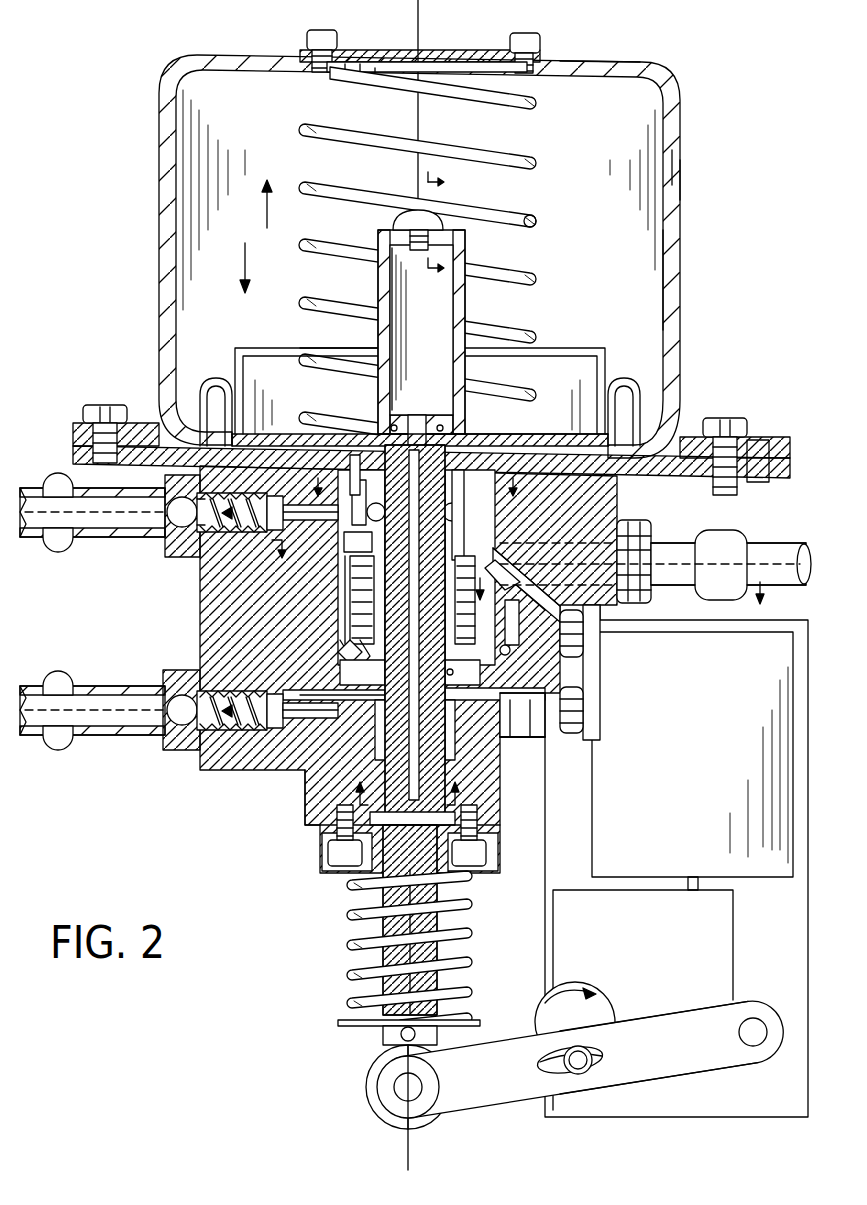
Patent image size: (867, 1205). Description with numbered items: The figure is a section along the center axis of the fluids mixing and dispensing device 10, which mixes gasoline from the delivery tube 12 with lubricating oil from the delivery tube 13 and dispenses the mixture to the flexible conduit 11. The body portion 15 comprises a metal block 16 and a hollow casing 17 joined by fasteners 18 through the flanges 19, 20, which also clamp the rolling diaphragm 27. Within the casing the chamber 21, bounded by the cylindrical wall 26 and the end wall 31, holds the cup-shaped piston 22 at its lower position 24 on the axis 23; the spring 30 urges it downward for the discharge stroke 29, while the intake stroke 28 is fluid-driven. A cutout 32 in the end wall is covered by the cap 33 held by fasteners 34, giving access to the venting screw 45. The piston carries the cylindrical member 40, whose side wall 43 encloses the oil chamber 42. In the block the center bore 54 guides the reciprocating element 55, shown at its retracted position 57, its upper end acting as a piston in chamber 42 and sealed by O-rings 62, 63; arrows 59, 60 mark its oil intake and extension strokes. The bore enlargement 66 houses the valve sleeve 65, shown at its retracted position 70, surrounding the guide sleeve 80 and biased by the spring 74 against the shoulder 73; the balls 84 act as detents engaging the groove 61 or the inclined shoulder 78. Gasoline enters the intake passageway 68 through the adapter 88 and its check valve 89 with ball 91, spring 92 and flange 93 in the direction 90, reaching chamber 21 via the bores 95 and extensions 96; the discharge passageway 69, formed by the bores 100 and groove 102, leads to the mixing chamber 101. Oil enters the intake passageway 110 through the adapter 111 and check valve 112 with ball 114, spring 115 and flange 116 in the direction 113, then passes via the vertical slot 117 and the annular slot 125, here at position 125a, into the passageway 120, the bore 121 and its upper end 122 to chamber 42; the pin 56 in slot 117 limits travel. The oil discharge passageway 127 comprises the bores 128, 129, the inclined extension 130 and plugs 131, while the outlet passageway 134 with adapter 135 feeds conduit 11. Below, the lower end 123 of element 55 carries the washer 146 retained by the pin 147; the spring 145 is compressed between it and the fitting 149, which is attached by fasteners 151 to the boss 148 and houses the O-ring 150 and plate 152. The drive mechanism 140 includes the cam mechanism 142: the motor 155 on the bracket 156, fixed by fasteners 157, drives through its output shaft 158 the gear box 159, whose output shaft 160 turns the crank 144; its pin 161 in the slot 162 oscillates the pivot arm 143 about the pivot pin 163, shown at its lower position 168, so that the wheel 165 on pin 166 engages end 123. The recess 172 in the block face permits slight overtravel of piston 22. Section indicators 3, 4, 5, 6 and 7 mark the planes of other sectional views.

The fluids mixing and dispensing device 10 is at (681, 168).
The flexible conduit 11 is at (758, 530).
The flexible delivery tube 12 is at (60, 540).
The flexible delivery tube 13 is at (72, 738).
The rigid body portion 15 is at (680, 318).
The solid cylindrical metal block 16 is at (200, 606).
The hollow cylindrical casing 17 is at (681, 243).
The screw type metal fasteners 18 is at (110, 405).
The annular flange 19 is at (770, 474).
The annular flange 20 is at (765, 453).
The chamber 21 is at (660, 160).
The piston 22 is at (268, 348).
The axis 23 is at (430, 130).
The lower position 24 is at (322, 348).
The cylindrical wall 26 is at (180, 240).
The rolling type circular diaphragm 27 is at (216, 378).
The intake stroke arrow 28 is at (272, 212).
The discharge stroke arrow 29 is at (242, 266).
The coiled compression spring 30 is at (536, 218).
The upper end wall 31 is at (585, 80).
The circular cutout 32 is at (350, 82).
The disk-type cap 33 is at (365, 58).
The screw type fasteners 34 is at (330, 32).
The hollow elongated cylindrical member 40 is at (382, 290).
The cylindrical chamber 42 is at (445, 310).
The cylindrical side wall 43 is at (390, 330).
The venting screw 45 is at (393, 222).
The center bore 54 is at (452, 738).
The reciprocatingly driven element 55 is at (378, 688).
The pin 56 is at (408, 835).
The retracted position 57 is at (360, 900).
The oil intake stroke arrow 59 is at (372, 737).
The stroke arrow 60 is at (440, 750).
The annular groove 61 is at (368, 670).
The O-ring 62 is at (388, 426).
The O-ring type seal 63 is at (450, 662).
The valve sleeve 65 is at (350, 572).
The cylindrical enlargement 66 is at (344, 595).
The intake passageway 68 is at (280, 525).
The discharge passageway 69 is at (500, 505).
The retracted position 70 is at (545, 575).
The shoulder 73 is at (500, 620).
The coiled compression spring 74 is at (340, 622).
The inclined annular shoulder 78 is at (380, 545).
The guide sleeve 80 is at (348, 630).
The metal ball 84 is at (383, 508).
The adapter 88 is at (190, 555).
The check valve 89 is at (172, 524).
The flow direction arrow 90 is at (245, 532).
The ball 91 is at (196, 504).
The coiled spring 92 is at (232, 493).
The annular flange 93 is at (276, 495).
The vertical bores 95 is at (372, 470).
The radial extensions 96 is at (348, 555).
The vertical bores 100 is at (500, 485).
The mixing chamber 101 is at (520, 604).
The annular groove 102 is at (488, 446).
The oil intake passageway 110 is at (298, 720).
The adapter 111 is at (185, 750).
The check valve 112 is at (178, 696).
The flow direction arrow 113 is at (232, 725).
The ball 114 is at (216, 691).
The compression spring 115 is at (250, 691).
The annular flange 116 is at (280, 694).
The vertical slot 117 is at (368, 757).
The passageway 120 is at (452, 677).
The axially extending bore 121 is at (440, 712).
The upper end 122 is at (404, 415).
The lower end 123 is at (380, 1048).
The annular slot 125 is at (410, 870).
The slot position 125a is at (390, 702).
The oil discharge passageway 127 is at (581, 672).
The horizontal bore 128 is at (492, 718).
The vertical bore 129 is at (510, 650).
The inclined extension 130 is at (520, 563).
The end plugs 131 is at (538, 742).
The mixed fluids outlet passageway 134 is at (598, 540).
The adapter 135 is at (636, 520).
The drive mechanism 140 is at (518, 1104).
The cam mechanism 142 is at (672, 1012).
The pivot arm 143 is at (672, 1078).
The crank 144 is at (596, 996).
The compression spring 145 is at (352, 940).
The washer 146 is at (338, 1020).
The radially projecting pin 147 is at (383, 1038).
The boss 148 is at (303, 802).
The annular fitting 149 is at (488, 855).
The O-ring 150 is at (487, 840).
The metal fasteners 151 is at (328, 852).
The annular metal plate 152 is at (480, 822).
The electric motor 155 is at (793, 812).
The bracket 156 is at (806, 930).
The metal fasteners 157 is at (590, 645).
The motor output shaft 158 is at (695, 888).
The gear box 159 is at (735, 935).
The gear output shaft 160 is at (566, 990).
The pin 161 is at (580, 1074).
The slot 162 is at (620, 1066).
The pivot pin 163 is at (748, 1046).
The wheel 165 is at (378, 1082).
The pin 166 is at (430, 1080).
The lower position 168 is at (380, 1108).
The recess 172 is at (250, 444).
The section line 3 is at (528, 538).
The section line 4 is at (626, 594).
The section line 5 is at (417, 496).
The section line 6 is at (406, 784).
The section line 7 is at (436, 226).